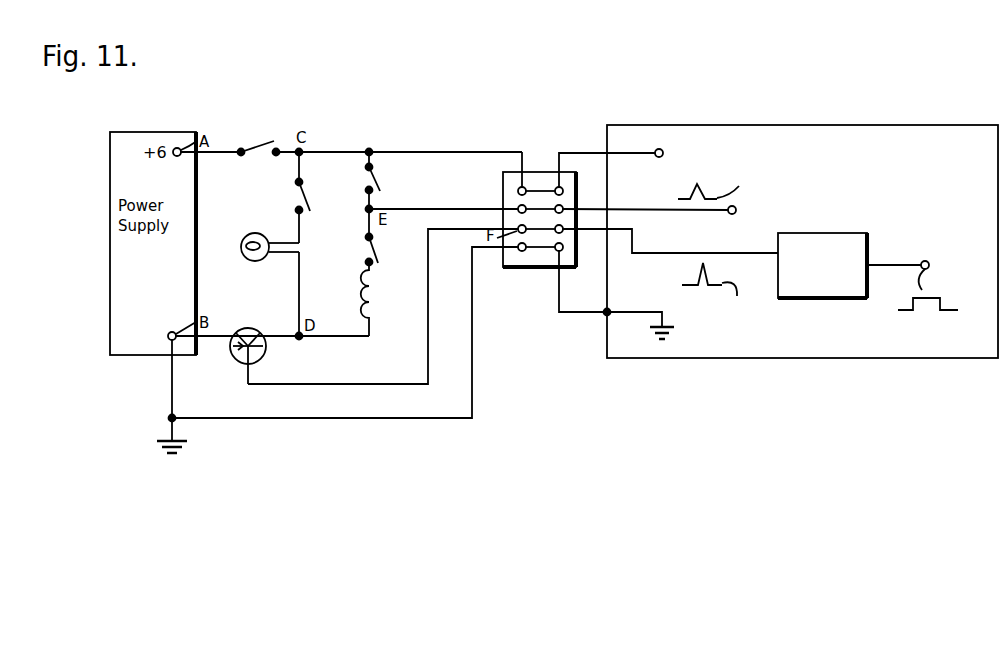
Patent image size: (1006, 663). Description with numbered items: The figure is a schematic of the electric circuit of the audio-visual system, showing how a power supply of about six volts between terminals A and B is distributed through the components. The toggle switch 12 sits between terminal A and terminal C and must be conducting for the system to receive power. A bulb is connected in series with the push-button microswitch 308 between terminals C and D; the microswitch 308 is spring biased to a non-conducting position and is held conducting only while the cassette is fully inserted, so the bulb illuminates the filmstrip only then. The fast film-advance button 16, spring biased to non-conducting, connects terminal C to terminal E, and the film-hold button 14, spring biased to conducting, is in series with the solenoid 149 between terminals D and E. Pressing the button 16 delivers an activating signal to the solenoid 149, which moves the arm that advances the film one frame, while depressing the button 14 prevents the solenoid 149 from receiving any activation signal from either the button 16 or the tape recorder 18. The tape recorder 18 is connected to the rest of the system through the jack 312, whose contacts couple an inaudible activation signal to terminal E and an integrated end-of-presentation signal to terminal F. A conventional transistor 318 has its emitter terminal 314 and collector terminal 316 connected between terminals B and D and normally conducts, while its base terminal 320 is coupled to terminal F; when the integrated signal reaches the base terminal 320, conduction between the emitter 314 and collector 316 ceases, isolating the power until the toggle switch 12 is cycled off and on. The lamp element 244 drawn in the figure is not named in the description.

The toggle switch 12 is at (256, 144).
The push-button microswitch 308 is at (309, 201).
The fast film-advance button 16 is at (378, 184).
The film-hold button 14 is at (377, 252).
The solenoid 149 is at (373, 292).
The lamp 244 is at (243, 247).
The emitter terminal 314 is at (240, 331).
The collector terminal 316 is at (259, 331).
The base terminal 320 is at (237, 350).
The transistor 318 is at (257, 352).
The jack 312 is at (538, 170).
The tape recorder 18 is at (815, 140).